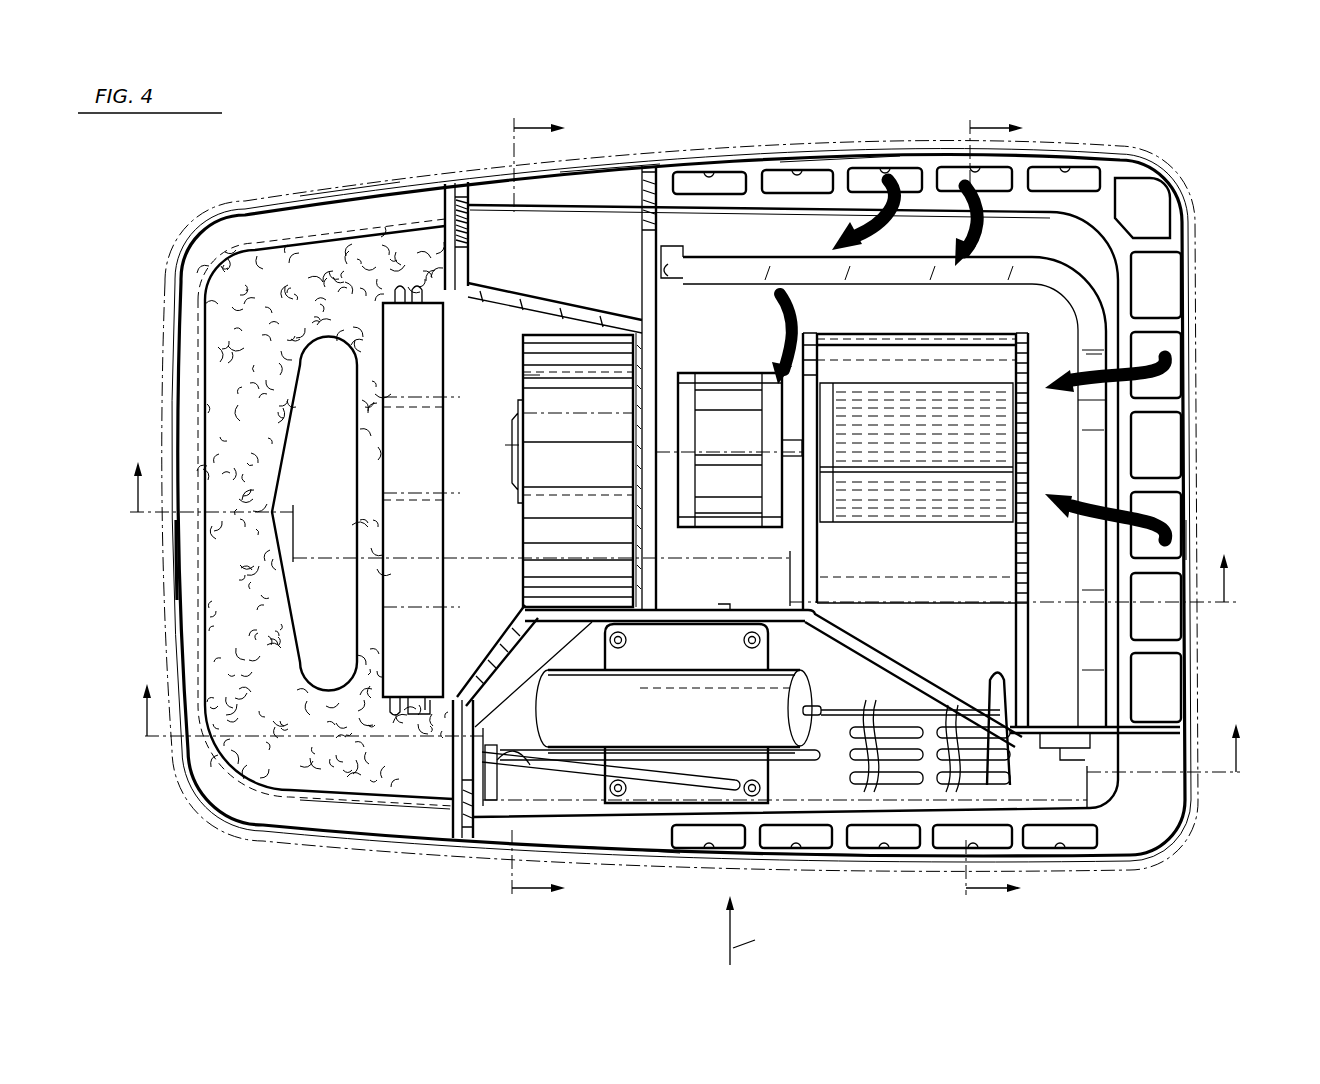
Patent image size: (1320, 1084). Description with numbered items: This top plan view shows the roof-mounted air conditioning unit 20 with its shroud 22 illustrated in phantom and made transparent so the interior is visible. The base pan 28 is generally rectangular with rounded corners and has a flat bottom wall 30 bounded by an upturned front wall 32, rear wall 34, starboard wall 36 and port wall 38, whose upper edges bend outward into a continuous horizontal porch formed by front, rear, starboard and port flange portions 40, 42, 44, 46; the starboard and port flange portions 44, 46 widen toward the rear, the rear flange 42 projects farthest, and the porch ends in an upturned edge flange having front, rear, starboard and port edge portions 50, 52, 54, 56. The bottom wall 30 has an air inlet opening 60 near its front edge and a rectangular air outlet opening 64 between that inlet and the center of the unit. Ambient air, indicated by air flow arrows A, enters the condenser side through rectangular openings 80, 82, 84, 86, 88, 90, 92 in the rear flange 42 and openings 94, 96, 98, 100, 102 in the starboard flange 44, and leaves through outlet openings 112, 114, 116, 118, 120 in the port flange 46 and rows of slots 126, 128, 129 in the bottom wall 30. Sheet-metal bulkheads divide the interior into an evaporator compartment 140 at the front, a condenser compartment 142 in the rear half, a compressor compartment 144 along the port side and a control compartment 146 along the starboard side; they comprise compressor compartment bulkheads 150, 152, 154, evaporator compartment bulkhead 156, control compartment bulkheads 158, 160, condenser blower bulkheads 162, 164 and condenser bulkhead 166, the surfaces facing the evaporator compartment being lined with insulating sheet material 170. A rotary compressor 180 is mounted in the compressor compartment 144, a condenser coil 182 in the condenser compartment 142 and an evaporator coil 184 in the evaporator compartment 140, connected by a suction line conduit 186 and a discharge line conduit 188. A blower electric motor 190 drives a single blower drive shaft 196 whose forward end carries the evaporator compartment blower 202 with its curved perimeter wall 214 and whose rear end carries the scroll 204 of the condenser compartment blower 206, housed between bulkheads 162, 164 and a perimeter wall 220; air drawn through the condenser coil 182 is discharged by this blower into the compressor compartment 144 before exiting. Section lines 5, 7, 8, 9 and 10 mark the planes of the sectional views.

The air conditioning unit 20 is at (347, 162).
The outer cabinet phantom outline 22 is at (200, 795).
The base pan 28 is at (207, 225).
The bottom wall 30 is at (212, 392).
The front wall 32 is at (210, 594).
The rear wall 34 is at (1115, 272).
The starboard wall 36 is at (730, 207).
The port wall 38 is at (785, 815).
The front flange portion 40 is at (178, 566).
The rear flange portion 42 is at (1170, 745).
The starboard flange portion 44 is at (606, 178).
The port flange portion 46 is at (620, 850).
The front edge portion 50 is at (172, 421).
The rear edge portion 52 is at (1194, 545).
The starboard edge portion 54 is at (838, 165).
The port edge portion 56 is at (830, 860).
The air inlet opening 60 is at (296, 390).
The air outlet opening 64 is at (518, 378).
The rectangular opening 80 is at (1178, 676).
The rectangular opening 82 is at (1180, 626).
The rectangular opening 84 is at (1182, 533).
The rectangular opening 86 is at (1180, 455).
The rectangular opening 88 is at (1178, 376).
The rectangular opening 90 is at (1178, 280).
The rectangular opening 92 is at (1165, 196).
The opening 94 is at (1070, 176).
The opening 96 is at (1000, 175).
The opening 98 is at (900, 174).
The opening 100 is at (790, 176).
The opening 102 is at (706, 178).
The outlet opening 112 is at (700, 850).
The outlet opening 114 is at (800, 850).
The outlet opening 116 is at (890, 850).
The outlet opening 118 is at (960, 850).
The outlet opening 120 is at (1070, 850).
The row of slots 126 is at (866, 722).
The row of slots 128 is at (946, 722).
The row of slots 129 is at (502, 752).
The evaporator compartment 140 is at (485, 501).
The condenser compartment 142 is at (956, 309).
The compressor compartment 144 is at (843, 647).
The control compartment 146 is at (596, 249).
The compressor compartment bulkhead 150 is at (455, 783).
The compressor compartment bulkhead 152 is at (515, 640).
The compressor compartment bulkhead 154 is at (700, 612).
The evaporator compartment bulkhead 156 is at (660, 292).
The control compartment bulkhead 158 is at (598, 300).
The control compartment bulkhead 160 is at (472, 240).
The condenser blower bulkhead 162 is at (805, 541).
The condenser blower bulkhead 164 is at (1030, 556).
The condenser bulkhead 166 is at (1145, 735).
The insulating sheet material 170 is at (445, 195).
The rotary compressor 180 is at (656, 666).
The condenser coil 182 is at (1068, 332).
The evaporator coil 184 is at (372, 434).
The suction line conduit 186 is at (585, 742).
The discharge line conduit 188 is at (996, 718).
The blower electric motor 190 is at (712, 370).
The blower drive shaft 196 is at (780, 446).
The evaporator compartment blower 202 is at (534, 423).
The scroll 204 is at (866, 383).
The condenser compartment blower 206 is at (945, 585).
The curved perimeter wall 214 is at (528, 534).
The perimeter wall 220 is at (978, 345).
The air flow arrows A is at (880, 225).
The section line 5 is at (748, 930).
The section line 7 is at (691, 746).
The section line 8 is at (678, 534).
The section line 9 is at (538, 509).
The section line 10 is at (994, 509).